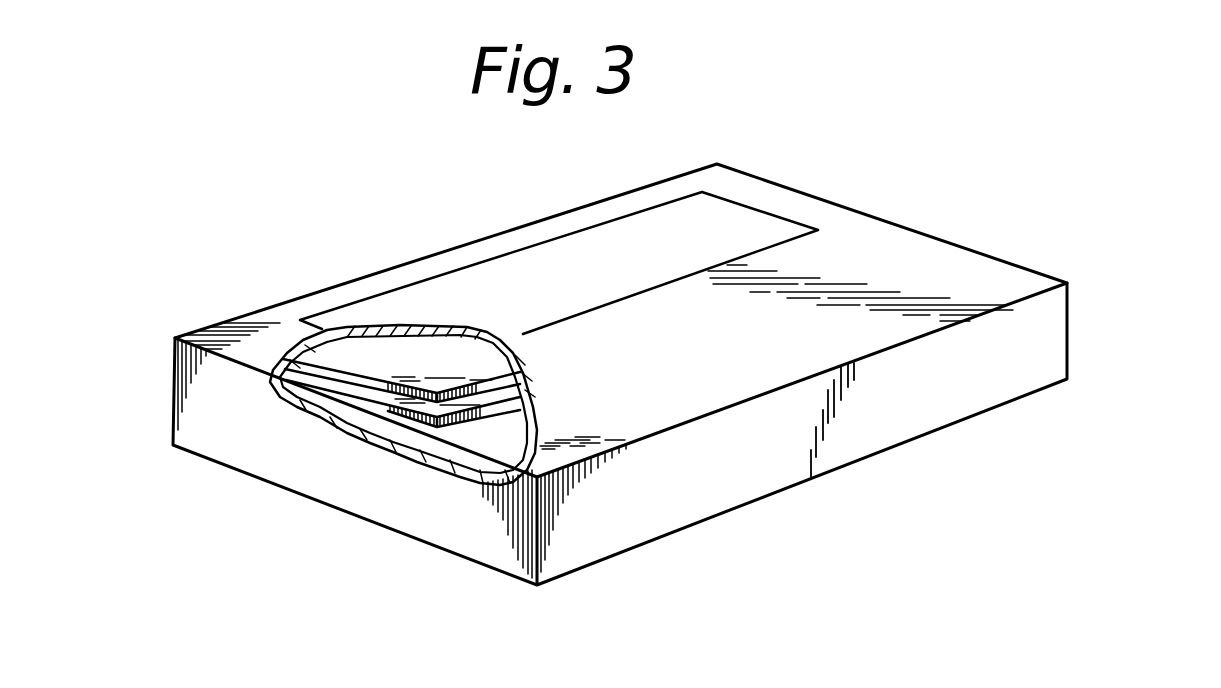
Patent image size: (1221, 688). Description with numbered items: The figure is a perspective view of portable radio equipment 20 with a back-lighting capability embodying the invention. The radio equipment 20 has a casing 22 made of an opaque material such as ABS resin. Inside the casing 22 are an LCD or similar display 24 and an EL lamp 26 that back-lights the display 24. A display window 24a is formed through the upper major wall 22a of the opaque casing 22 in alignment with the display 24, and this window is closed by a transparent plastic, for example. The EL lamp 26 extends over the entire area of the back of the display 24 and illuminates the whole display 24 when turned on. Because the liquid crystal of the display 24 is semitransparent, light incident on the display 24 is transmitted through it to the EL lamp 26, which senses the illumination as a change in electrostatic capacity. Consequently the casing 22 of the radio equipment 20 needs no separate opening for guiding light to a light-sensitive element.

The portable radio equipment 20 is at (993, 208).
The casing 22 is at (1042, 337).
The upper major wall 22a is at (875, 245).
The display 24 is at (395, 350).
The display window 24a is at (635, 237).
The EL lamp 26 is at (407, 420).